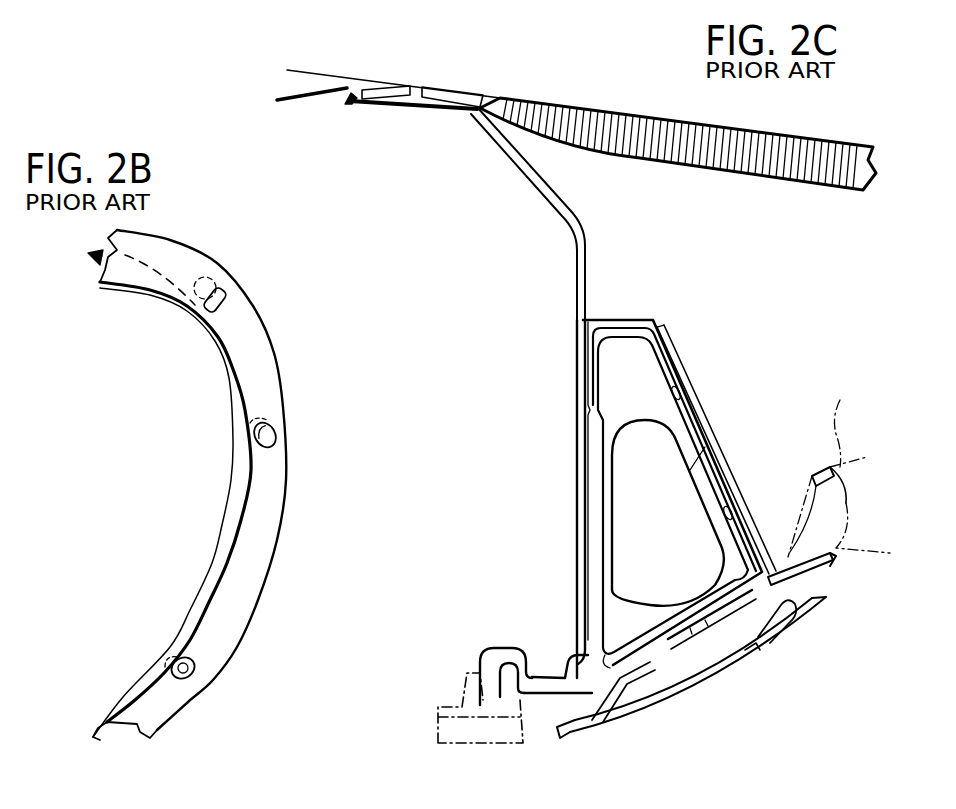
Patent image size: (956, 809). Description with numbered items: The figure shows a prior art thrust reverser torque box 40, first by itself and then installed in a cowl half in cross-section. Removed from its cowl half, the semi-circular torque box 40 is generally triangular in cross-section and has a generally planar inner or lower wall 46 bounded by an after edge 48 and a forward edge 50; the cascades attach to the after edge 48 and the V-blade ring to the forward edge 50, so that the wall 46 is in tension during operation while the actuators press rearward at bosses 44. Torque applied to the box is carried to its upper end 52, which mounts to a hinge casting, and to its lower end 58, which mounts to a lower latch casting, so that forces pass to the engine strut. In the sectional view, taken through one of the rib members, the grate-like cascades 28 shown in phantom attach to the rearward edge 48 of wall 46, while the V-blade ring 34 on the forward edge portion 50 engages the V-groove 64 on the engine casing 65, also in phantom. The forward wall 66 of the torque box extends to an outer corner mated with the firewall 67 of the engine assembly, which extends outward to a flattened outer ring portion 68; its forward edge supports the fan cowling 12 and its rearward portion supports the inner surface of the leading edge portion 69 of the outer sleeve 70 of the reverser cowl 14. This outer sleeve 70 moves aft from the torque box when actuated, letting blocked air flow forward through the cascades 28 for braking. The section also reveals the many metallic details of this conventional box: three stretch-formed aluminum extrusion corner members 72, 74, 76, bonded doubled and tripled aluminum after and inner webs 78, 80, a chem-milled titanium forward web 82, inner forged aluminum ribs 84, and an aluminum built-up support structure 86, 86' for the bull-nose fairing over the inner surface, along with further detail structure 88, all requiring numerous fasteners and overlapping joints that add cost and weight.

In FIG. 2C, the fan cowling 12 is at (328, 70).
In FIG. 2C, the reverser cowl 14 is at (808, 137).
In FIG. 2C, the cascades 28 is at (839, 467).
In FIG. 2C, the V-blade ring 34 is at (505, 650).
In FIG. 2B, the torque box 40 is at (262, 383).
In FIG. 2C, the torque box 40 is at (705, 447).
In FIG. 2B, the bosses 44 is at (245, 312).
In FIG. 2B, the inner or lower wall 46 is at (232, 522).
In FIG. 2C, the inner or lower wall 46 is at (690, 633).
In FIG. 2B, the after edge 48 is at (214, 547).
In FIG. 2C, the after edge 48 is at (810, 575).
In FIG. 2B, the forward edge 50 is at (224, 567).
In FIG. 2C, the forward edge 50 is at (535, 722).
In FIG. 2B, the upper end 52 is at (100, 267).
In FIG. 2B, the lower end 58 is at (143, 722).
In FIG. 2C, the V-groove 64 is at (478, 664).
In FIG. 2C, the engine casing 65 is at (455, 690).
In FIG. 2C, the forward wall 66 is at (576, 493).
In FIG. 2C, the firewall 67 is at (530, 190).
In FIG. 2C, the flattened outer ring portion 68 is at (412, 112).
In FIG. 2C, the leading edge portion 69 is at (445, 90).
In FIG. 2C, the outer sleeve 70 is at (718, 170).
In FIG. 2C, the corner member 72 is at (585, 695).
In FIG. 2C, the corner member 74 is at (800, 610).
In FIG. 2C, the corner member 76 is at (620, 318).
In FIG. 2C, the after web 78 is at (697, 412).
In FIG. 2C, the inner web 80 is at (672, 655).
In FIG. 2C, the forward web 82 is at (588, 515).
In FIG. 2C, the inner forged aluminum rib 84 is at (638, 377).
In FIG. 2C, the built-up support structure 86 is at (661, 717).
In FIG. 2C, the built-up support structure 86' is at (804, 670).
In FIG. 2C, the channel 88 is at (745, 670).